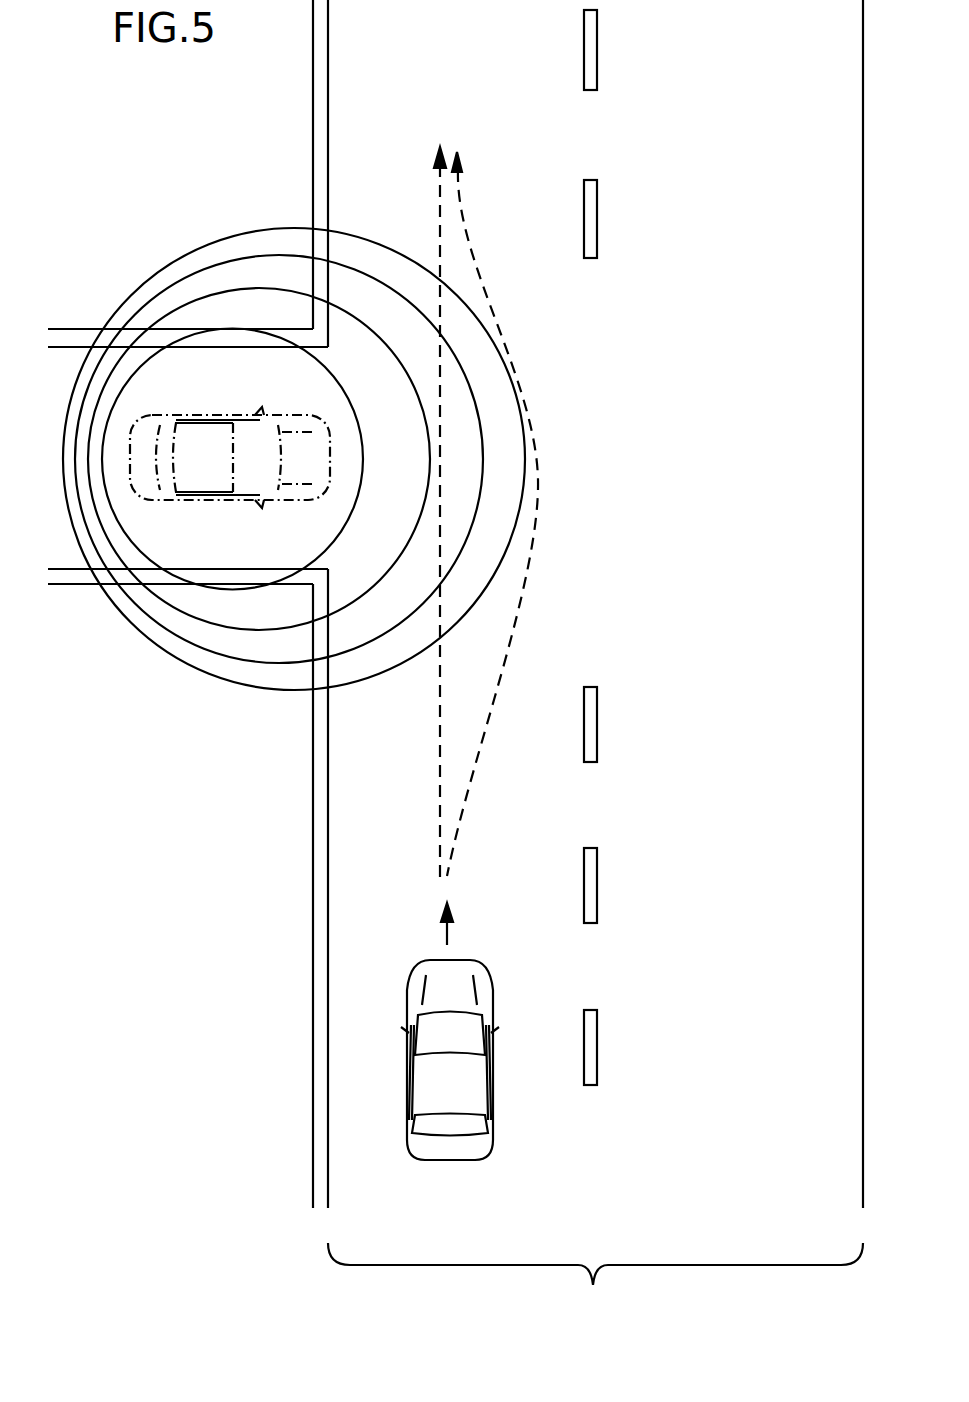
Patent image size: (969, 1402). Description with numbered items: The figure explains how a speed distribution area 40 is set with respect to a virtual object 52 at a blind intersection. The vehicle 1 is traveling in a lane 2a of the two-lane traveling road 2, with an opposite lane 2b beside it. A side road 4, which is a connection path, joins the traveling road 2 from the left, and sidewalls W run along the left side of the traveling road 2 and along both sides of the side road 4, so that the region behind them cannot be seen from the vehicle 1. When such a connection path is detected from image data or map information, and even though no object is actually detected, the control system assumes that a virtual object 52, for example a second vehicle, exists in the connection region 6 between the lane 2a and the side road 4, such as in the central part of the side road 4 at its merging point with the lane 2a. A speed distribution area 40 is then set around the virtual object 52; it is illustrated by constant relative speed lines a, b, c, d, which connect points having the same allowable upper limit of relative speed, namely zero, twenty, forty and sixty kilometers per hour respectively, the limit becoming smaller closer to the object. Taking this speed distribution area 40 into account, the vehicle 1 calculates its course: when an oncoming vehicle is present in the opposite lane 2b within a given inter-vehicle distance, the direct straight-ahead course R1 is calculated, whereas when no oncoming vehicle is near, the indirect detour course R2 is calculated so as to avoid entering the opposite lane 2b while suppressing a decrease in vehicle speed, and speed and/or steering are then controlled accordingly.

The vehicle 1 is at (412, 1078).
The traveling road 2 is at (595, 657).
The lane 2a is at (452, 1182).
The opposite lane 2b is at (725, 1182).
The side road 4 is at (62, 551).
The connection region 6 is at (243, 549).
The speed distribution area 40 is at (294, 431).
The virtual object 52 is at (197, 483).
The sidewall W is at (312, 60).
The direct course R1 is at (438, 186).
The indirect course R2 is at (464, 202).
The relative speed line a is at (335, 379).
The relative speed line b is at (362, 322).
The relative speed line c is at (380, 284).
The relative speed line d is at (388, 250).